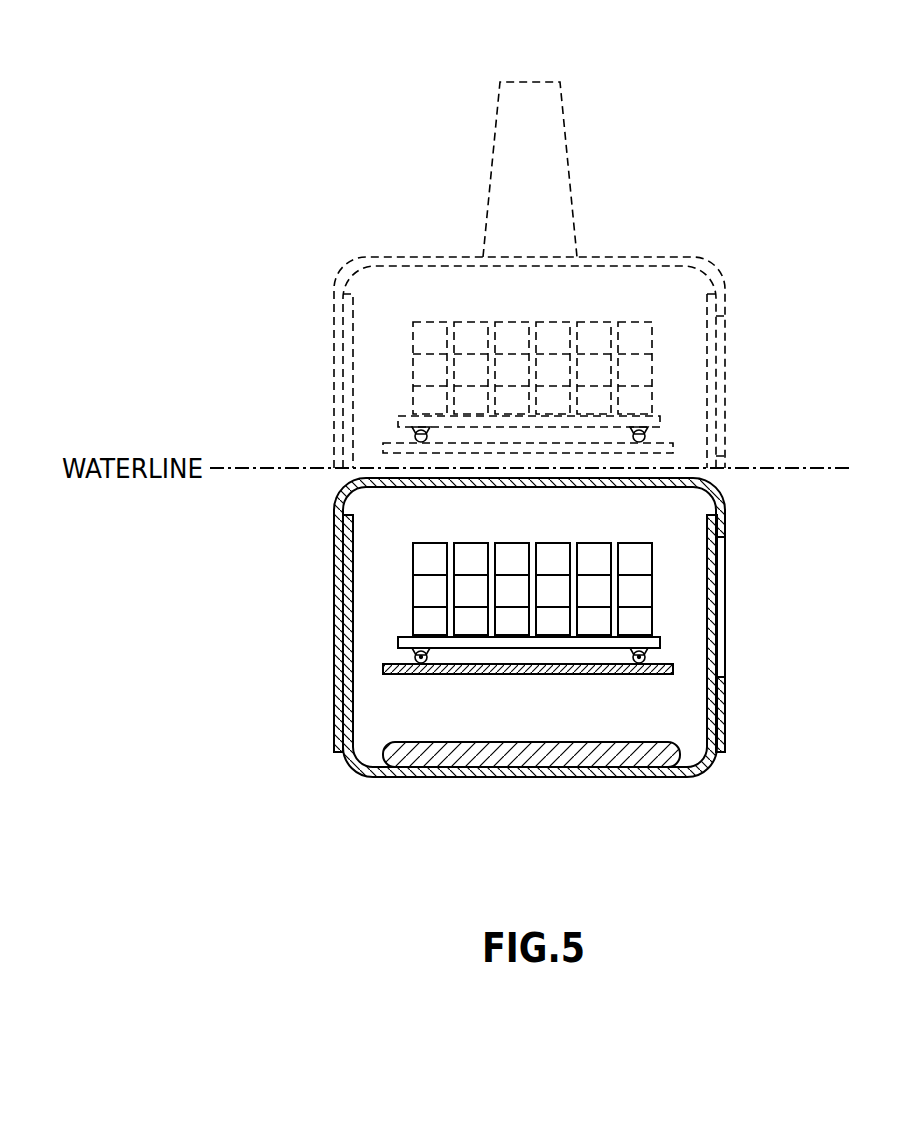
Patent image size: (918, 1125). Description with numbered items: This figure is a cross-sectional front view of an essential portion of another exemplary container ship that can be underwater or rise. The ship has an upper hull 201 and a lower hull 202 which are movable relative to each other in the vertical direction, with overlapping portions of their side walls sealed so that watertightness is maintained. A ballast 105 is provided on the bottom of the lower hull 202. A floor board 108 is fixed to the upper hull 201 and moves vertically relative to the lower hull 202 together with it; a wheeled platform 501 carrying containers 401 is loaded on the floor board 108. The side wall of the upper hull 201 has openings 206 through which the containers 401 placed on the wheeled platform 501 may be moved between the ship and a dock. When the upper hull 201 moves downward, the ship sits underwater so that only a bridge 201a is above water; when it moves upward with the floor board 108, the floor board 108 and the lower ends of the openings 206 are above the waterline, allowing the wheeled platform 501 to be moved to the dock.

The bridge 201a is at (533, 90).
The upper hull 201 is at (335, 645).
The lower hull 202 is at (400, 778).
The opening 206 is at (725, 665).
The ballast 105 is at (522, 765).
The floor board 108 is at (672, 665).
The wheeled platform 501 is at (660, 638).
The container 401 is at (514, 556).